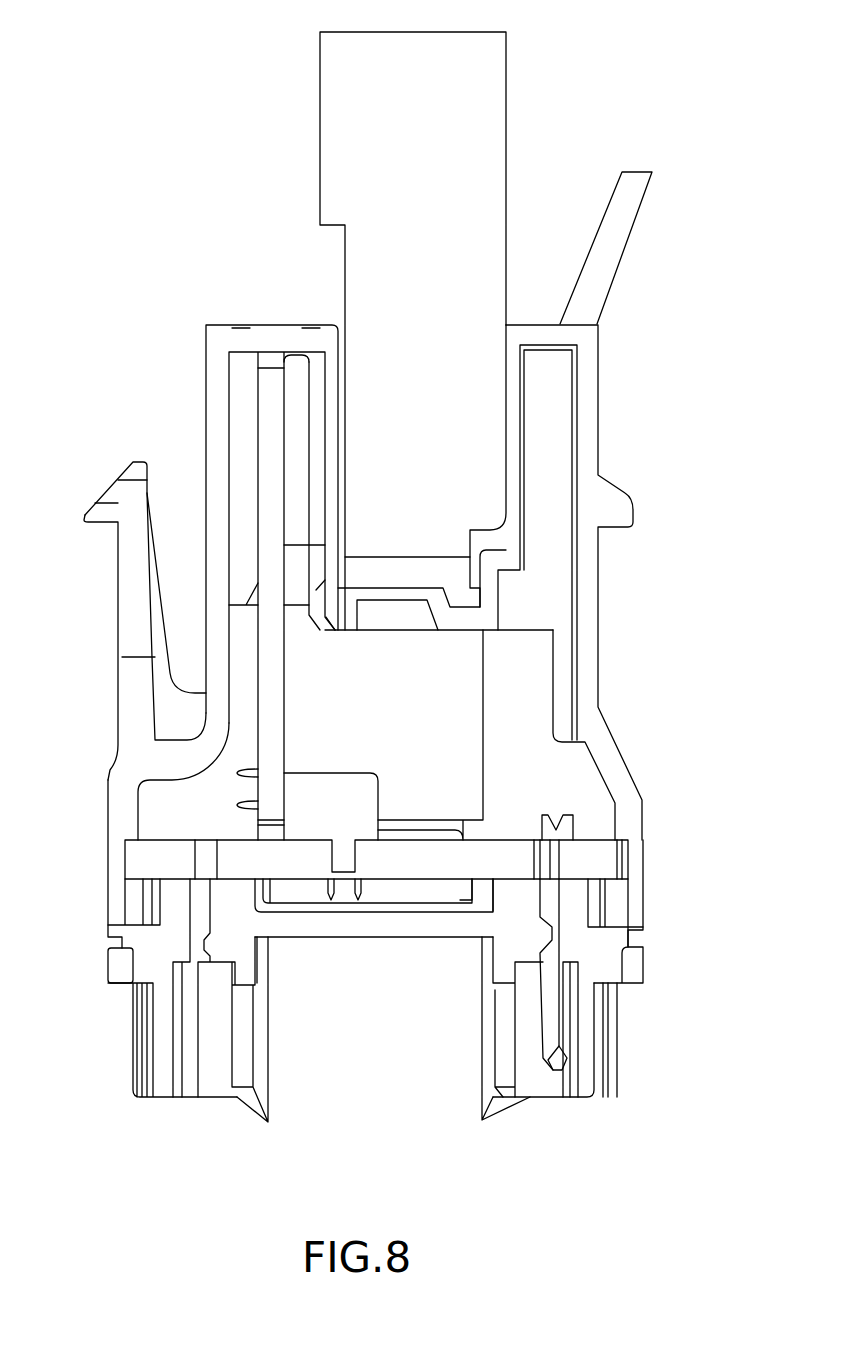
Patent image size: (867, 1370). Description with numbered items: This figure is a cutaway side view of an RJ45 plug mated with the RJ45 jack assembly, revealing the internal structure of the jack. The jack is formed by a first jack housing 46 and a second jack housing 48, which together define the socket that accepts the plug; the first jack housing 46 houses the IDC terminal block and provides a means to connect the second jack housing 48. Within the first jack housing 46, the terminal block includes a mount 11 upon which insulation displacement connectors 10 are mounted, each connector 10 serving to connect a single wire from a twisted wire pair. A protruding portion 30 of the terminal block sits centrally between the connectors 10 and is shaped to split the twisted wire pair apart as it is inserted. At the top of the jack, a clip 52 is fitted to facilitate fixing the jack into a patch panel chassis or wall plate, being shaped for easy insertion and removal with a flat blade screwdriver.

The insulation displacement connector 10 is at (578, 1118).
The mount 11 is at (355, 925).
The protruding portion 30 is at (500, 1127).
The first jack housing 46 is at (652, 815).
The second jack housing 48 is at (210, 428).
The clip 52 is at (80, 523).